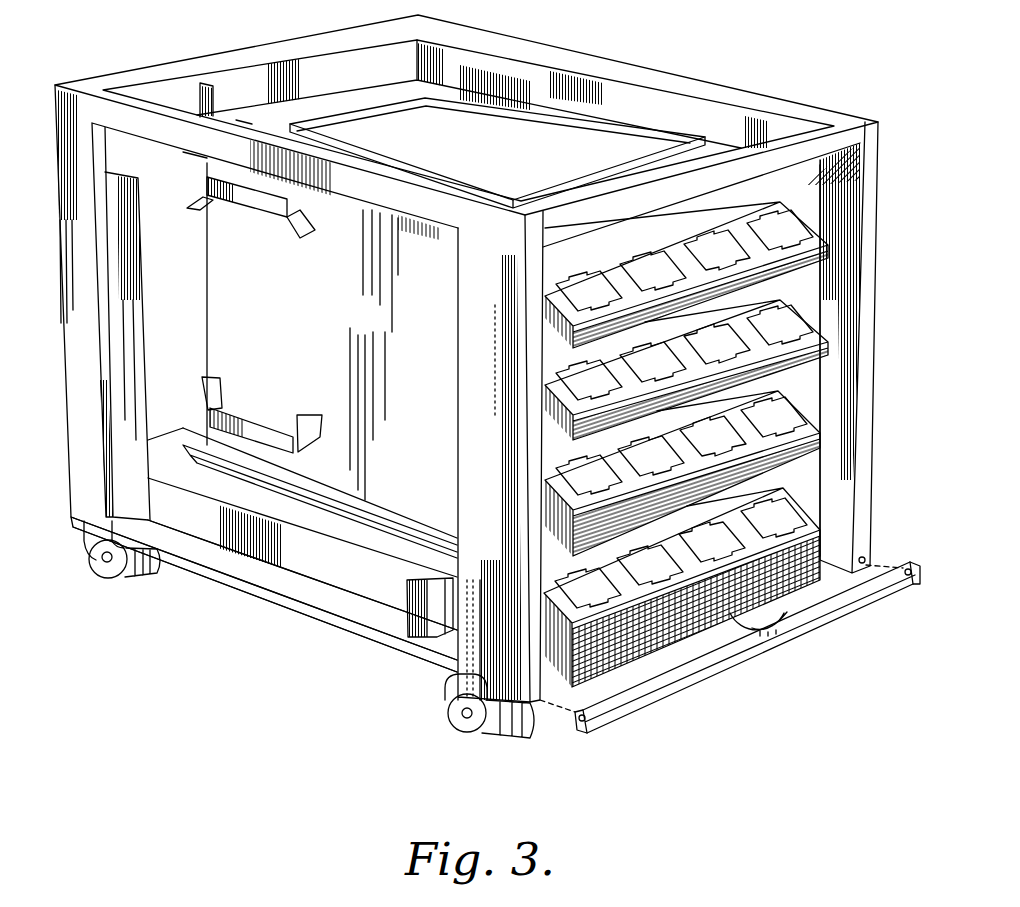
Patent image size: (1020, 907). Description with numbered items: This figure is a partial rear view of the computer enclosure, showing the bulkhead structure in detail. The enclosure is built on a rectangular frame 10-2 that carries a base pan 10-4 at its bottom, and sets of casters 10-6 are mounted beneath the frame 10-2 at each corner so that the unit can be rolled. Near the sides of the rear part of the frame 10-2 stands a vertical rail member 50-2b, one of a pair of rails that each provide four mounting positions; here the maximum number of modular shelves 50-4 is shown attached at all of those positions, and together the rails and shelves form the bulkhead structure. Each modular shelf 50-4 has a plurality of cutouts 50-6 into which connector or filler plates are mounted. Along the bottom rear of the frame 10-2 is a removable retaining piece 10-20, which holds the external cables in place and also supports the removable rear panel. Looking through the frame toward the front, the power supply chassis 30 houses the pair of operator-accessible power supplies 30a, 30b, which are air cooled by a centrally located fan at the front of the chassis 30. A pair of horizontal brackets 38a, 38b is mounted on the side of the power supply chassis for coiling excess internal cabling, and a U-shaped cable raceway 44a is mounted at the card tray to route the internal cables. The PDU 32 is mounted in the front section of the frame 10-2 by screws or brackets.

The rectangular frame 10-2 is at (115, 78).
The base pan 10-4 is at (307, 590).
The casters 10-6 is at (117, 580).
The removable retaining piece 10-20 is at (615, 718).
The power supply chassis 30 is at (377, 326).
The power supply 30a is at (487, 153).
The power supply 30b is at (425, 160).
The PDU 32 is at (307, 560).
The horizontal bracket 38a is at (245, 200).
The horizontal bracket 38b is at (268, 418).
The cable raceway 44a is at (245, 118).
The vertical rail member 50-2b is at (820, 217).
The modular shelf 50-4 is at (828, 340).
The cutout 50-6 is at (590, 285).